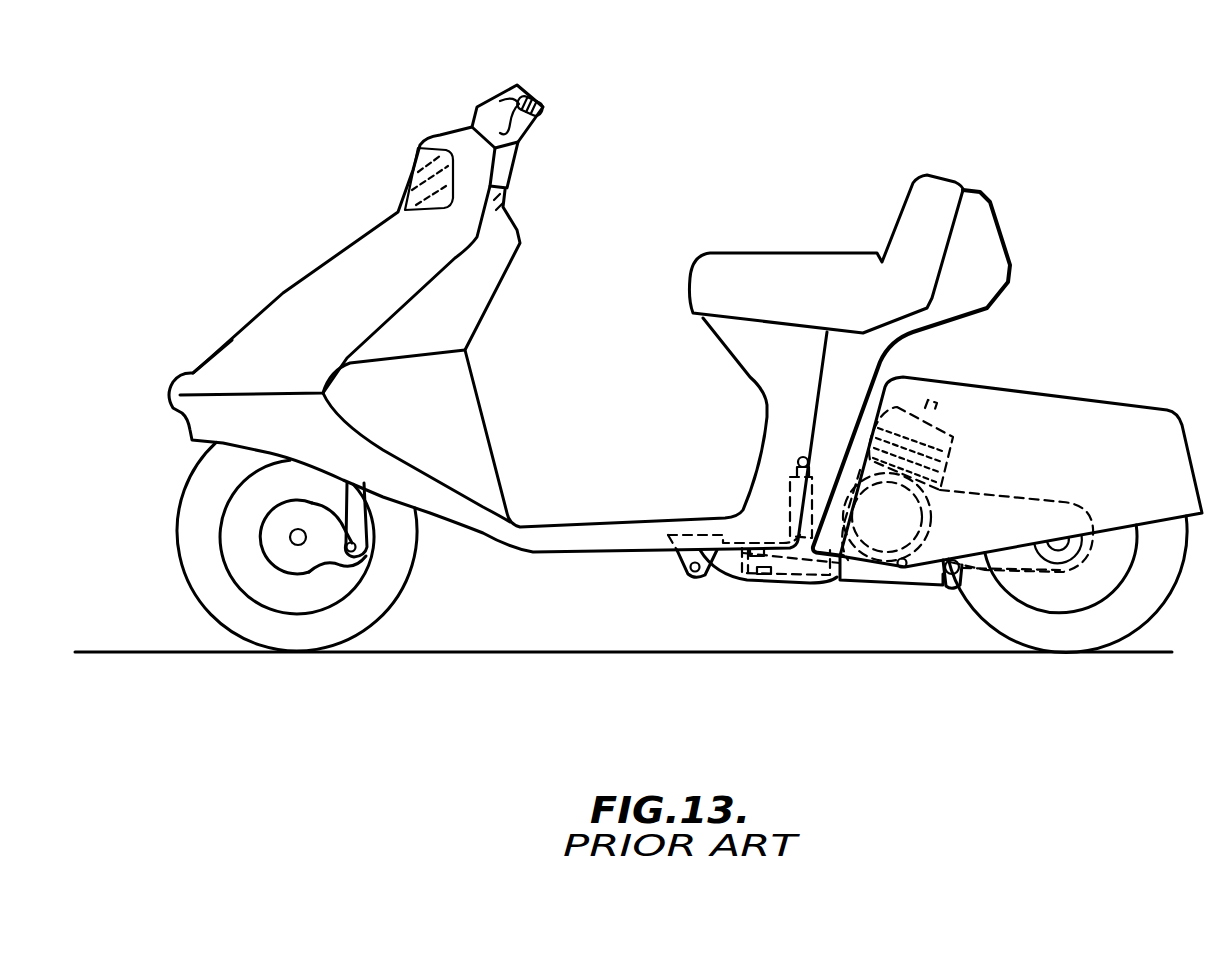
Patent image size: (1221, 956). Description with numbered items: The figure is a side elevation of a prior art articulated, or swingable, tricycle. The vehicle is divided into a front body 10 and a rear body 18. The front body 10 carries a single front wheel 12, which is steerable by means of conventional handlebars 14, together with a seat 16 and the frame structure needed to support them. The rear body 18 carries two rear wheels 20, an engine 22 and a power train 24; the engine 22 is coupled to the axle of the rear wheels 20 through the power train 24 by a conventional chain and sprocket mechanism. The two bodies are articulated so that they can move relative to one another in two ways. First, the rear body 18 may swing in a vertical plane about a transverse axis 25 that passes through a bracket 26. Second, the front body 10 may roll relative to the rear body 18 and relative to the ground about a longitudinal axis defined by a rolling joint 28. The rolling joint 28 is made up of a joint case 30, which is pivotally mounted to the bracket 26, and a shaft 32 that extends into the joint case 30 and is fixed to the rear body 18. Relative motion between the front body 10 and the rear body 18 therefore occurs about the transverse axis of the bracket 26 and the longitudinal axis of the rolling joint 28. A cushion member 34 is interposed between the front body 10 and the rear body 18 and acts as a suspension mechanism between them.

The front body 10 is at (596, 535).
The front wheel 12 is at (180, 581).
The handlebars 14 is at (542, 103).
The seat 16 is at (742, 250).
The rear body 18 is at (1138, 403).
The rear wheels 20 is at (1102, 630).
The engine 22 is at (962, 424).
The power train 24 is at (1033, 572).
The transverse axis 25 is at (690, 577).
The bracket 26 is at (692, 558).
The rolling joint 28 is at (722, 570).
The joint case 30 is at (800, 575).
The shaft 32 is at (828, 578).
The cushion member 34 is at (790, 482).